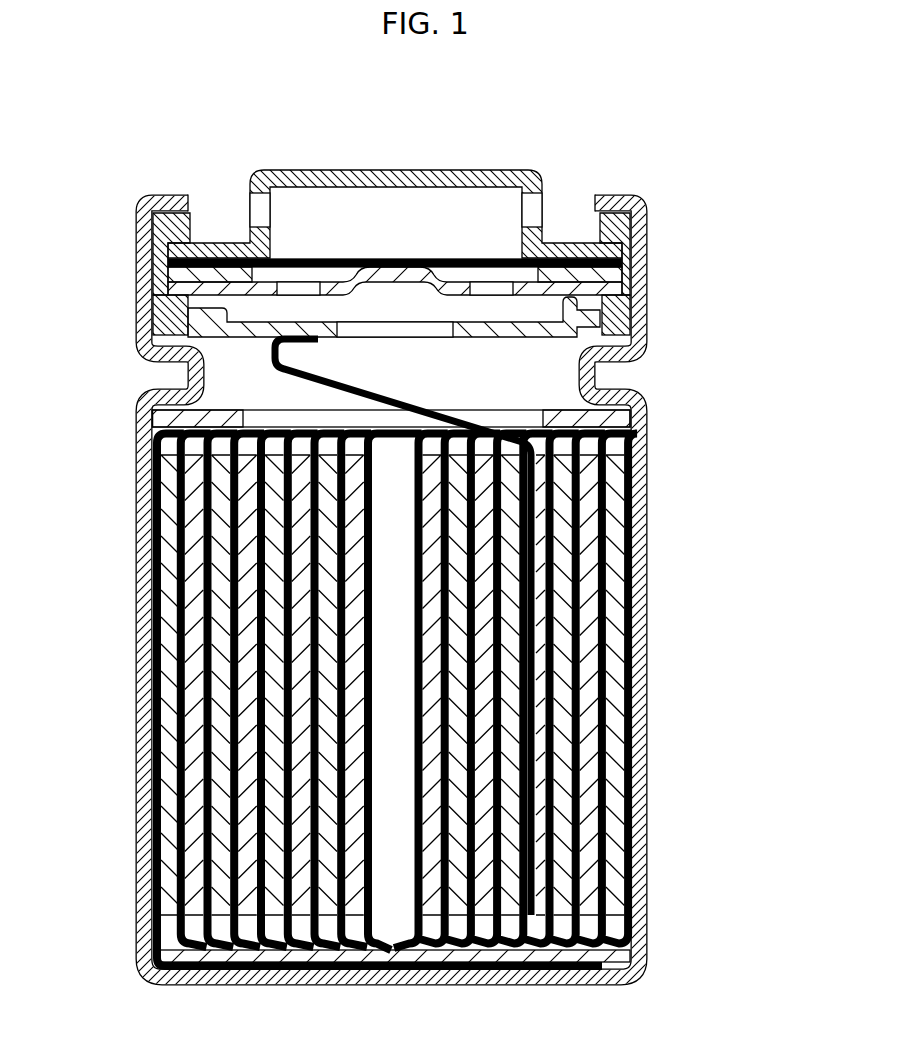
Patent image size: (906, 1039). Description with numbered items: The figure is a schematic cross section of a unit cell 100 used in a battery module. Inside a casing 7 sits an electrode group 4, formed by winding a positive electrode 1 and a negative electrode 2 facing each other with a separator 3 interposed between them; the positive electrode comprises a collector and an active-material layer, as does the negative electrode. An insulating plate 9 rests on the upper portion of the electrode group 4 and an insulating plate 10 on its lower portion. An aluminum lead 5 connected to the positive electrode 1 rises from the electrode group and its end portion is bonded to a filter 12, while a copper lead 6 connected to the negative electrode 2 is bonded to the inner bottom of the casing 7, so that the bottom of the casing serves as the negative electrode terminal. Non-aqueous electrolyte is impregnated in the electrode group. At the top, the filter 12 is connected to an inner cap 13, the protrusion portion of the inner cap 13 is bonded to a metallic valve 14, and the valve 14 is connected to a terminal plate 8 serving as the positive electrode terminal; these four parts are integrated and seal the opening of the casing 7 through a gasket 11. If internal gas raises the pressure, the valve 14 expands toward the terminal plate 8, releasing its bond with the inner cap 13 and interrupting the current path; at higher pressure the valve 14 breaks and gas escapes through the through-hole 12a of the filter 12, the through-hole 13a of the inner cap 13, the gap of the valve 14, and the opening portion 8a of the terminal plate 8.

The unit cell 100 is at (657, 128).
The positive electrode 1 is at (587, 685).
The negative electrode 2 is at (612, 655).
The separator 3 is at (630, 630).
The electrode group 4 is at (482, 692).
The lead 5 is at (270, 352).
The lead 6 is at (402, 985).
The casing 7 is at (140, 637).
The terminal plate 8 is at (395, 182).
The opening portion 8a is at (528, 213).
The insulating plate 9 is at (617, 423).
The insulating plate 10 is at (622, 955).
The gasket 11 is at (620, 232).
The filter 12 is at (441, 221).
The through-hole 12a is at (395, 328).
The inner cap 13 is at (395, 198).
The through-hole 13a is at (305, 288).
The valve 14 is at (290, 261).